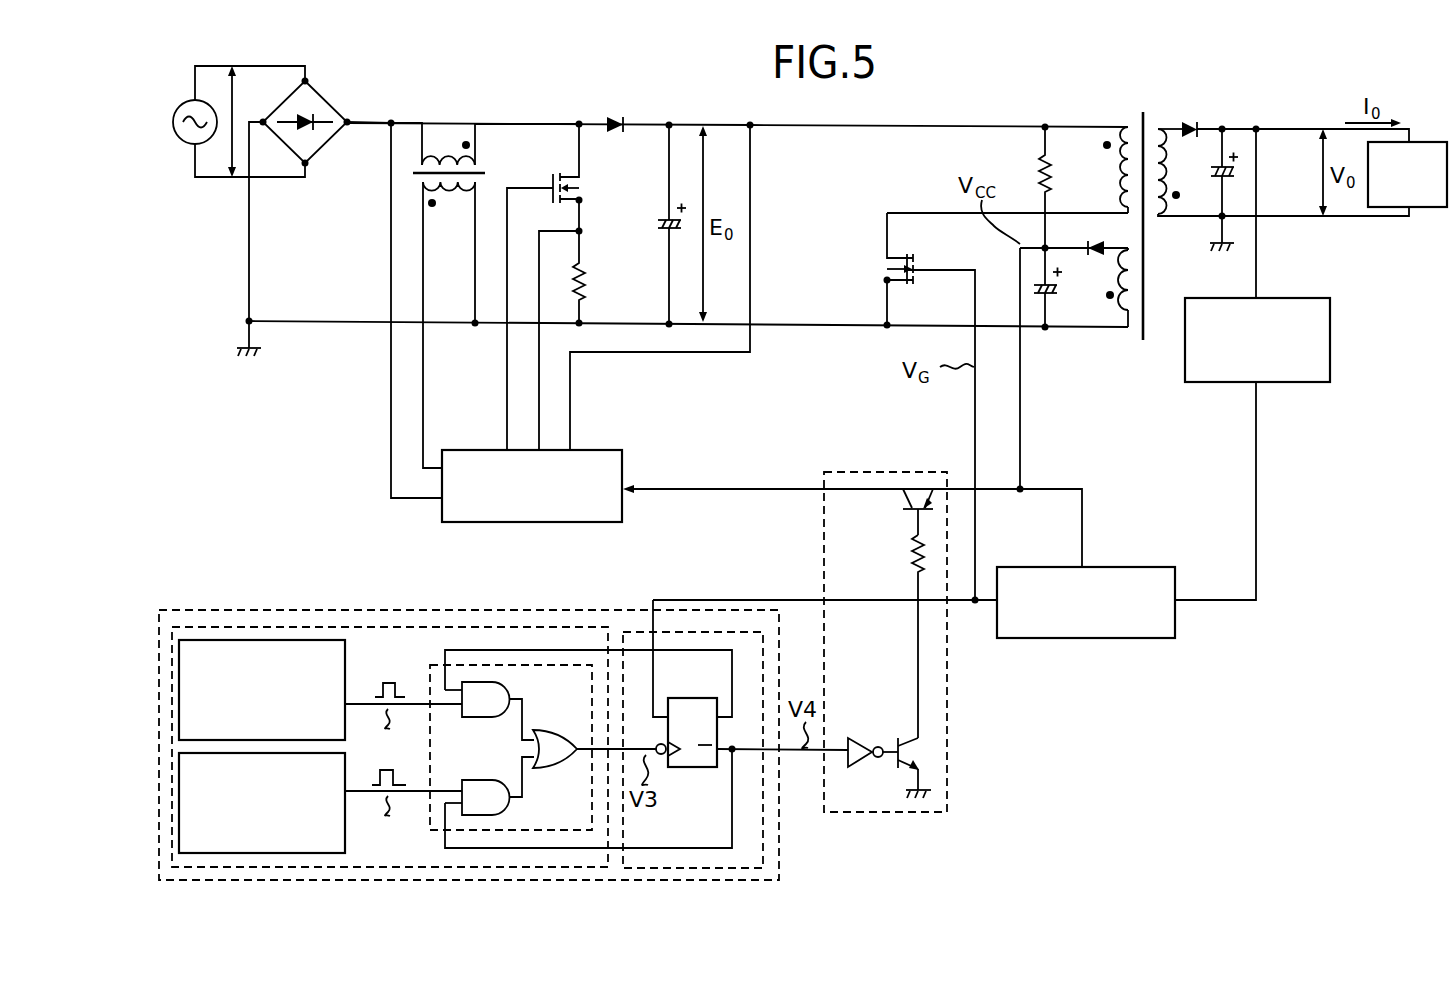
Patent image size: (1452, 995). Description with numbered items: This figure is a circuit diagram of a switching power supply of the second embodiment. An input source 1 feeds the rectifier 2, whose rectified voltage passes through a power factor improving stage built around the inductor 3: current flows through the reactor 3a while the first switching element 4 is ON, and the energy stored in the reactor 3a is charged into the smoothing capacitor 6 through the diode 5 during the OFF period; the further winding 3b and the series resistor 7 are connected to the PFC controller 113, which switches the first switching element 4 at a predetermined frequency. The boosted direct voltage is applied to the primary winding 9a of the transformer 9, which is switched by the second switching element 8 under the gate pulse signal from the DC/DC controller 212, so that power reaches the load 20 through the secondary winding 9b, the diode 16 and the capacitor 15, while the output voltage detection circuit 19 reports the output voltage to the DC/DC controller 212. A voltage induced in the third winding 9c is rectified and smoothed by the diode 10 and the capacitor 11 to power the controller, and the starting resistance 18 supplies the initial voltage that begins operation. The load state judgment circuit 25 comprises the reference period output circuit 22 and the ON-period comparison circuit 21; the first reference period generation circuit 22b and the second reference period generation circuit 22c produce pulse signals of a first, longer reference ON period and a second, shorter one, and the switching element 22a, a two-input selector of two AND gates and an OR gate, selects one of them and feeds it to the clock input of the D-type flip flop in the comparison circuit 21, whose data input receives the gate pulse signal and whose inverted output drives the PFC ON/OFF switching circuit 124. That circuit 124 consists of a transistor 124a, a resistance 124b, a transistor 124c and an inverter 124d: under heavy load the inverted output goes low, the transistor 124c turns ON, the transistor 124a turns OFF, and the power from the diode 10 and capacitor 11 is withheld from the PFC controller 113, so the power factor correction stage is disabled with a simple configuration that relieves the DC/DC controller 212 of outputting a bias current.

The AC power source 1 is at (178, 140).
The rectifier 2 is at (287, 148).
The transformer (boost inductor) 3 is at (485, 279).
The reactor 3a is at (452, 148).
The secondary winding of transformer 3 3b is at (448, 211).
The first switching element 4 is at (582, 182).
The diode 5 is at (608, 118).
The smoothing capacitor 6 is at (656, 224).
The resistor 7 is at (585, 280).
The second switching element 8 is at (884, 261).
The transformer 9 is at (1252, 244).
The primary winding of transformer 9 9a is at (1126, 130).
The secondary winding 9b is at (1163, 208).
The third winding 9c is at (1122, 312).
The diode 10 is at (1096, 240).
The capacitor 11 is at (1068, 294).
The output smoothing capacitor 15 is at (1238, 174).
The rectifying diode 16 is at (1199, 123).
The starting resistance 18 is at (1040, 166).
The output voltage detection circuit 19 is at (1290, 384).
The load 20 is at (1440, 142).
The ON period comparison circuit 21 is at (763, 857).
The reference period output circuit 22 is at (390, 715).
The switching element 22a is at (500, 663).
The first reference period generation circuit 22b is at (346, 830).
The second reference period generation circuit 22c is at (358, 646).
The load state judgment circuit 25 is at (230, 606).
The PFC controller 113 is at (442, 515).
The PFC ON/OFF switching circuit 124 is at (878, 616).
The transistor 124a is at (924, 488).
The resistance 124b is at (914, 542).
The transistor 124c is at (920, 758).
The inverter 124d is at (868, 740).
The DC/DC controller 212 is at (1087, 640).